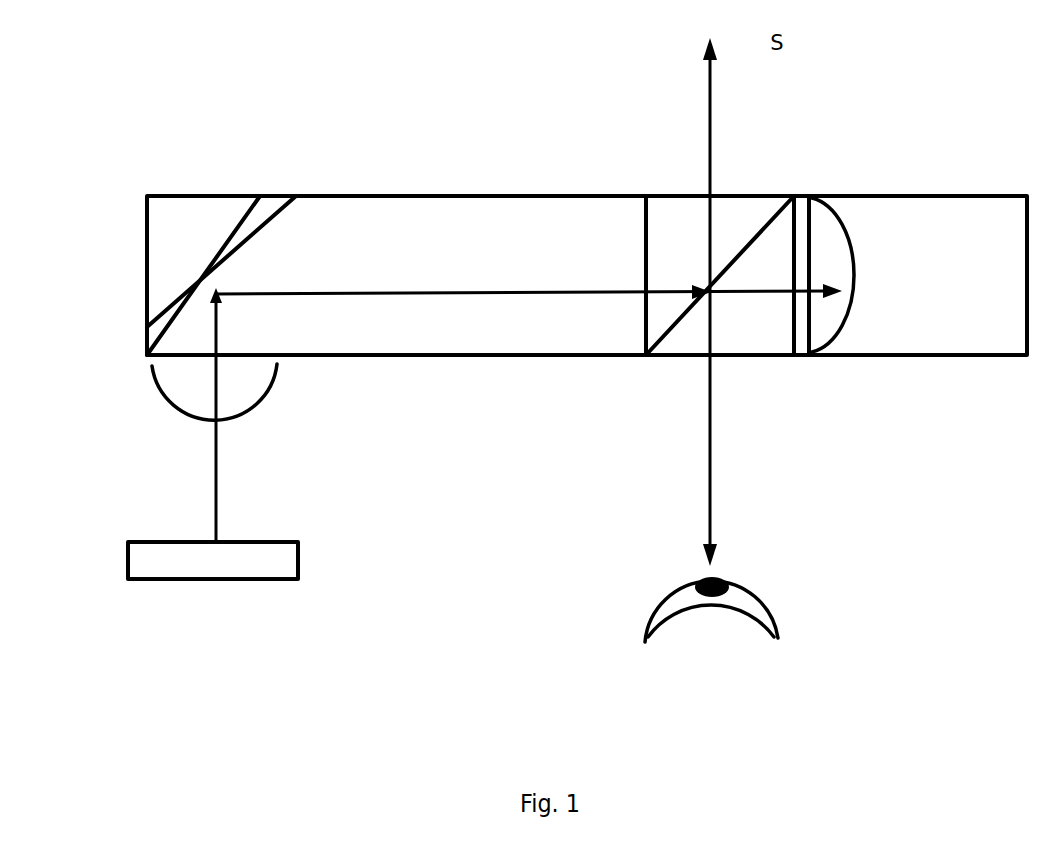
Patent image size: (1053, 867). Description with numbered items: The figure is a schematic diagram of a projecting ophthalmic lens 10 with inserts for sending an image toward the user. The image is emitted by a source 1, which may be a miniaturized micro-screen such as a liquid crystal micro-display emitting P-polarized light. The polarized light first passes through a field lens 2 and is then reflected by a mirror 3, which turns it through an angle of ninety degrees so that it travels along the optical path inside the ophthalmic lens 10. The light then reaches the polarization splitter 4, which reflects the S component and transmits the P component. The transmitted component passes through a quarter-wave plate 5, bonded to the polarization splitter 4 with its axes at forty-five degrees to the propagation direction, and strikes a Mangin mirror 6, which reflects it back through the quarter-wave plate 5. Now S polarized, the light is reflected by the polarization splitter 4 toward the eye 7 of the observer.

The source 1 is at (202, 567).
The field lens 2 is at (200, 415).
The mirror 3 is at (173, 327).
The polarization splitter 4 is at (672, 342).
The quarter-wave plate 5 is at (816, 207).
The Mangin mirror 6 is at (835, 343).
The eye 7 is at (690, 657).
The ophthalmic lens 10 is at (465, 167).